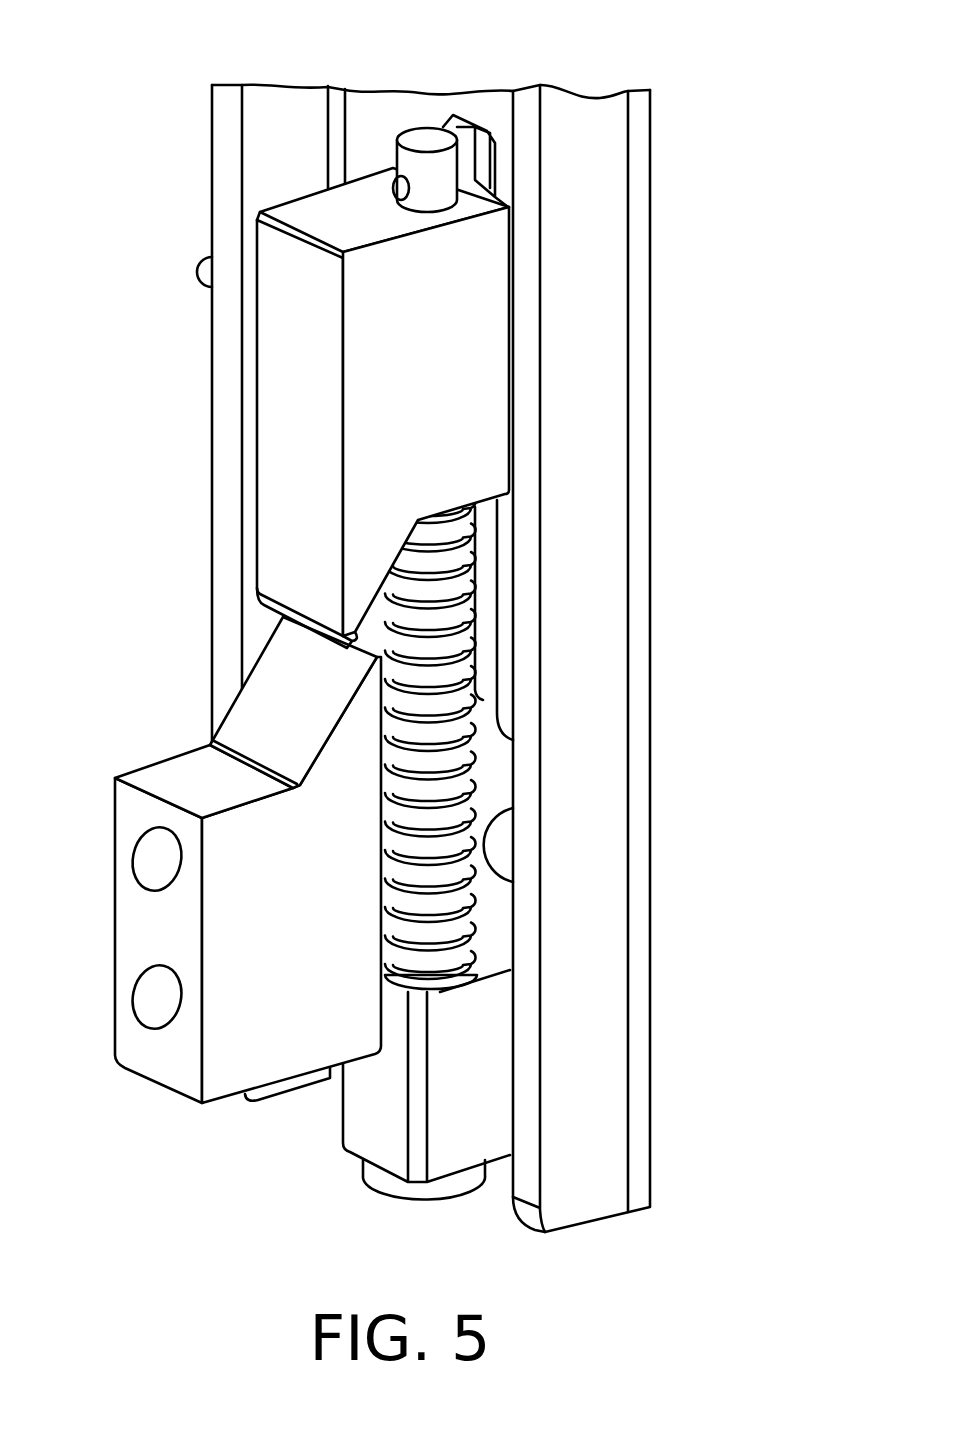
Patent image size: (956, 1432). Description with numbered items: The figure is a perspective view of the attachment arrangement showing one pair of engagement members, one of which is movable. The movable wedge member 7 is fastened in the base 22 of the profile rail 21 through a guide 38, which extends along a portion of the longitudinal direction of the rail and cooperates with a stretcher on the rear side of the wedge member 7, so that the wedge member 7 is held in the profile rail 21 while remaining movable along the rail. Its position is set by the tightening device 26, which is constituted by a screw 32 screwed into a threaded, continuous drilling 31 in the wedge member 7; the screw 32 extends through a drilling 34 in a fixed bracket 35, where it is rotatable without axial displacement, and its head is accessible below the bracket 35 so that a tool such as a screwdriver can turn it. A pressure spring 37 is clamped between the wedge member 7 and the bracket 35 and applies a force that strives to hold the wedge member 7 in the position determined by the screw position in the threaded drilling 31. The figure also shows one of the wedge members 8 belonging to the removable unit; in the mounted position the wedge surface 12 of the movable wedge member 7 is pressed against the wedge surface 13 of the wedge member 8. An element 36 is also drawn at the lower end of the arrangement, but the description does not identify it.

The wedge member 7 is at (275, 546).
The wedge member 8 is at (237, 937).
The wedge surface 12 is at (340, 647).
The wedge surface 13 is at (270, 721).
The profile rail 21 is at (656, 331).
The base of the profile rail 22 is at (360, 146).
The tightening device 26 is at (482, 757).
The threaded continuous drilling 31 is at (418, 205).
The screw 32 is at (430, 645).
The drilling 34 is at (437, 990).
The fixed bracket 35 is at (473, 1090).
The boss 36 is at (383, 1182).
The pressure spring 37 is at (460, 833).
The guide 38 is at (475, 178).